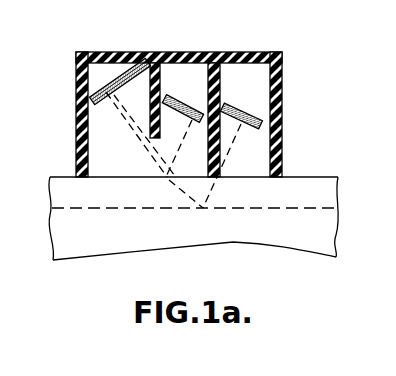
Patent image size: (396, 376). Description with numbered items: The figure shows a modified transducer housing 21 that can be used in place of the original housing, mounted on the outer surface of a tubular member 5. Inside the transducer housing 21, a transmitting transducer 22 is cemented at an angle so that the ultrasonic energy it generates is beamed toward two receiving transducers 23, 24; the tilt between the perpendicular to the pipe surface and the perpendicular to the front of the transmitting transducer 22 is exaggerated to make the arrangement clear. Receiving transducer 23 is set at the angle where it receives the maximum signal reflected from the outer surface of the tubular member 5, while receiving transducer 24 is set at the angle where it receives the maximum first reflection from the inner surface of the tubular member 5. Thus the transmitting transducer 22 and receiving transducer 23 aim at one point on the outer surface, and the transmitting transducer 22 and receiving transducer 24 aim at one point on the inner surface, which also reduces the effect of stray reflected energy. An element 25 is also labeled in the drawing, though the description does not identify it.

The transducer housing 21 is at (181, 114).
The transmitting transducer 22 is at (77, 98).
The receiving transducer 23 is at (191, 104).
The receiving transducer 24 is at (252, 114).
The deflecting mirror plate 25 is at (108, 68).
The tubular member 5 is at (333, 195).